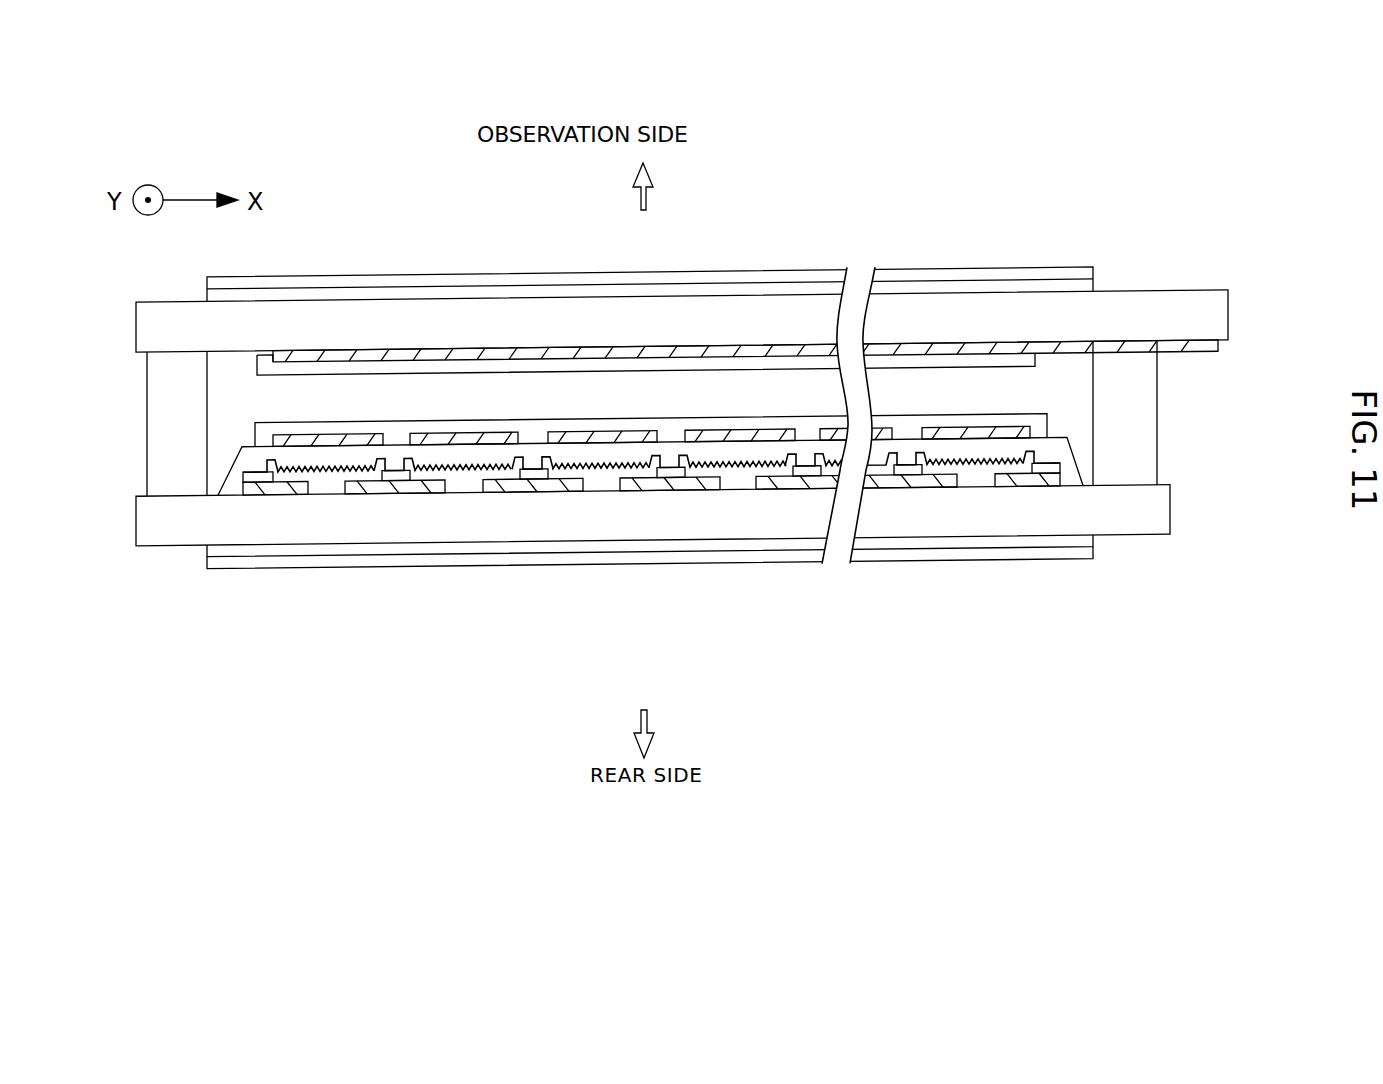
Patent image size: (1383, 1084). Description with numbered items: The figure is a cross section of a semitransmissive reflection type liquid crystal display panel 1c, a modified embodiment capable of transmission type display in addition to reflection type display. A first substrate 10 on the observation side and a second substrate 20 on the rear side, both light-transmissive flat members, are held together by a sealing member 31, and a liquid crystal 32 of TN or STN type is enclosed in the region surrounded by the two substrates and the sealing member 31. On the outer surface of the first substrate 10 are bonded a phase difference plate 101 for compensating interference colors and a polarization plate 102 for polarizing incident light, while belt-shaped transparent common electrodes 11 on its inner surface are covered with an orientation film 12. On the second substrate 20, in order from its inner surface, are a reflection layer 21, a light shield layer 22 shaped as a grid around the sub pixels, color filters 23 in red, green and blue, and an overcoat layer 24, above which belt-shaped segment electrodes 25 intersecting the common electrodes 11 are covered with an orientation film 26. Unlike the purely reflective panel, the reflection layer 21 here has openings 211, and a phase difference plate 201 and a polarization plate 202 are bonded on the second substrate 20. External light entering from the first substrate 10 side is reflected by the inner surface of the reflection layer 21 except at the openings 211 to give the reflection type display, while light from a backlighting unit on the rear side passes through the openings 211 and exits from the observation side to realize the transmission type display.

The liquid crystal display panel 1c is at (879, 204).
The first substrate 10 is at (1206, 315).
The common electrodes 11 is at (1217, 345).
The orientation film 12 is at (258, 364).
The phase difference plate 101 is at (1087, 283).
The polarization plate 102 is at (1081, 267).
The second substrate 20 is at (1160, 507).
The phase difference plate 201 is at (1087, 536).
The polarization plate 202 is at (1081, 556).
The reflection layer 21 is at (282, 497).
The openings 211 is at (310, 503).
The light shield layer 22 is at (668, 477).
The color filters 23 is at (357, 472).
The overcoat layer 24 is at (242, 465).
The segment electrodes 25 is at (278, 439).
The orientation film 26 is at (258, 427).
The sealing member 31 is at (1135, 443).
The liquid crystal 32 is at (1074, 406).